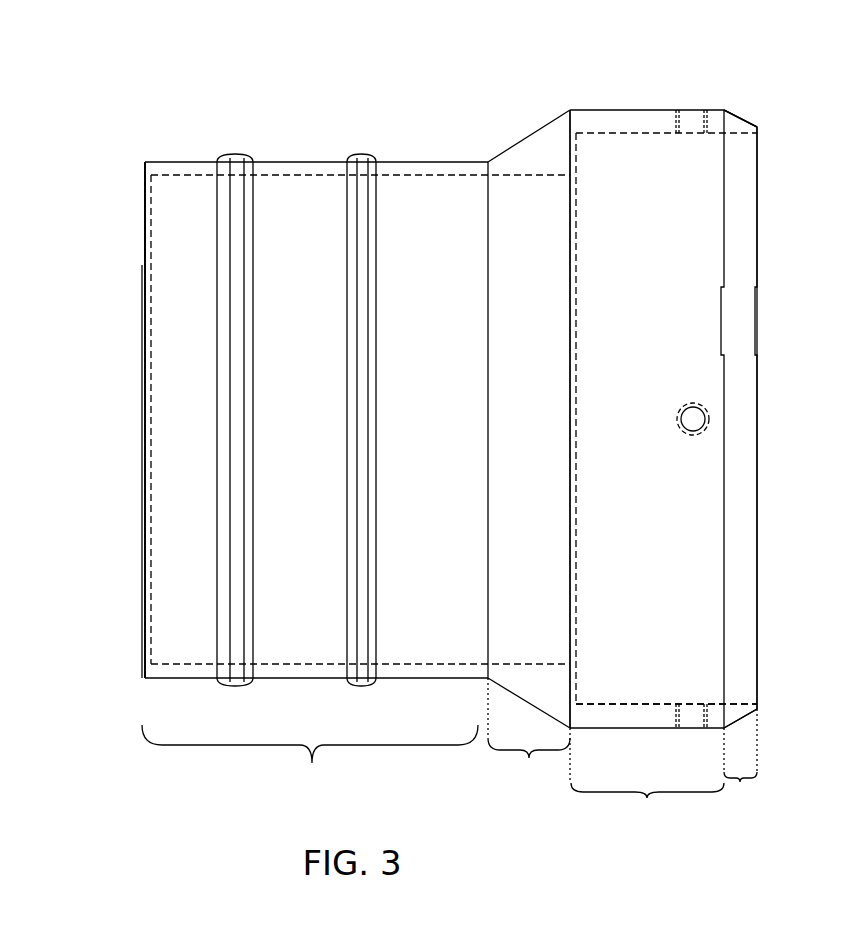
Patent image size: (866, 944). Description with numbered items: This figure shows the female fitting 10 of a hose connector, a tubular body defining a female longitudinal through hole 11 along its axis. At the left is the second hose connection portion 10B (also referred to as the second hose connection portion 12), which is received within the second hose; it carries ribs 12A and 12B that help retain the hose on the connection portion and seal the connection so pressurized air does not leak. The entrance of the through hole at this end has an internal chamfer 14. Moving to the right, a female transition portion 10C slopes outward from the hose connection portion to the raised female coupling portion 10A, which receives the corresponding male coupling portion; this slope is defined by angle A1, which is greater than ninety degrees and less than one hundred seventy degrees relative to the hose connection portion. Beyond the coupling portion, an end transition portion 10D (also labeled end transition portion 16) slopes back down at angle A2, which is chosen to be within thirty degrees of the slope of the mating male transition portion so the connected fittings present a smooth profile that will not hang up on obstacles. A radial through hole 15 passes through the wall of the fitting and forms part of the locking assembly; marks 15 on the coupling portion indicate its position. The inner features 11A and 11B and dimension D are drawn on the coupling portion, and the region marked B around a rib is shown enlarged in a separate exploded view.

The female fitting 10 is at (85, 260).
The internal chamfer 14 is at (147, 173).
The second hose connection portion 12 is at (337, 399).
The rib 12A is at (247, 343).
The rib 12B is at (362, 326).
The second hose connection portion 10B is at (310, 763).
The female transition portion 10C is at (529, 446).
The female coupling portion 10A is at (663, 469).
The end transition portion 10D is at (741, 462).
The female longitudinal through hole 11 is at (765, 349).
The inner wall surface 11A is at (645, 702).
The step wall 11B is at (573, 680).
The radial through hole 15 is at (692, 120).
The end transition portion 16 is at (742, 122).
The angle A1 is at (517, 140).
The angle A2 is at (754, 118).
The depth dimension D is at (578, 322).
The portion B is at (230, 625).